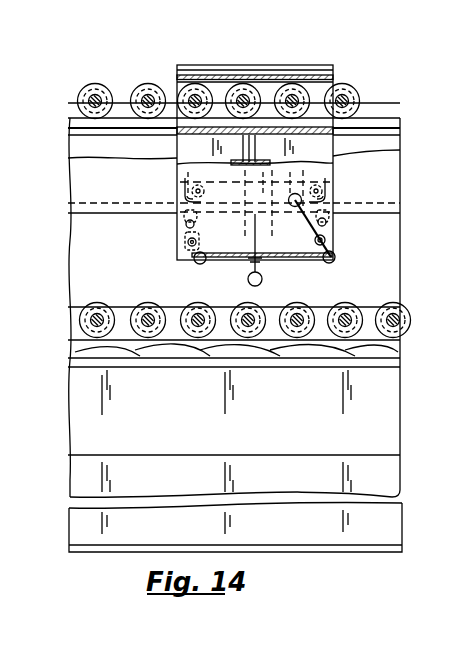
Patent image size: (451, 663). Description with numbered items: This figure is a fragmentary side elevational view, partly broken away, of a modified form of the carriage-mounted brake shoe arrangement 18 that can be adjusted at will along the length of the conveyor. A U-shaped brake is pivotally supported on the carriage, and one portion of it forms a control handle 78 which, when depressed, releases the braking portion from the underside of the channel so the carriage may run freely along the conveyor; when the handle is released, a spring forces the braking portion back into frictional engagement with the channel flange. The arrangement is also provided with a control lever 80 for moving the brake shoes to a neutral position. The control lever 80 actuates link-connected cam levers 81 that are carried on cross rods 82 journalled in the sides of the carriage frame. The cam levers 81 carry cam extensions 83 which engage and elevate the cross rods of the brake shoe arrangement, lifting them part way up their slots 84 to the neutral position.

The brake shoe arrangement 18 is at (352, 163).
The control handle 78 is at (450, 283).
The control lever 80 is at (314, 162).
The cam levers 81 is at (199, 261).
The cross rods 82 is at (189, 246).
The cam extensions 83 is at (186, 225).
The slots 84 is at (180, 210).